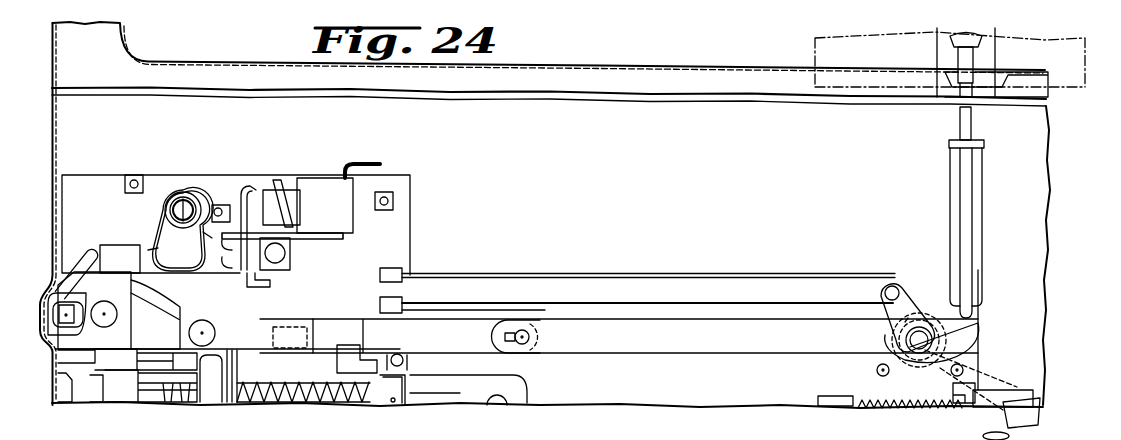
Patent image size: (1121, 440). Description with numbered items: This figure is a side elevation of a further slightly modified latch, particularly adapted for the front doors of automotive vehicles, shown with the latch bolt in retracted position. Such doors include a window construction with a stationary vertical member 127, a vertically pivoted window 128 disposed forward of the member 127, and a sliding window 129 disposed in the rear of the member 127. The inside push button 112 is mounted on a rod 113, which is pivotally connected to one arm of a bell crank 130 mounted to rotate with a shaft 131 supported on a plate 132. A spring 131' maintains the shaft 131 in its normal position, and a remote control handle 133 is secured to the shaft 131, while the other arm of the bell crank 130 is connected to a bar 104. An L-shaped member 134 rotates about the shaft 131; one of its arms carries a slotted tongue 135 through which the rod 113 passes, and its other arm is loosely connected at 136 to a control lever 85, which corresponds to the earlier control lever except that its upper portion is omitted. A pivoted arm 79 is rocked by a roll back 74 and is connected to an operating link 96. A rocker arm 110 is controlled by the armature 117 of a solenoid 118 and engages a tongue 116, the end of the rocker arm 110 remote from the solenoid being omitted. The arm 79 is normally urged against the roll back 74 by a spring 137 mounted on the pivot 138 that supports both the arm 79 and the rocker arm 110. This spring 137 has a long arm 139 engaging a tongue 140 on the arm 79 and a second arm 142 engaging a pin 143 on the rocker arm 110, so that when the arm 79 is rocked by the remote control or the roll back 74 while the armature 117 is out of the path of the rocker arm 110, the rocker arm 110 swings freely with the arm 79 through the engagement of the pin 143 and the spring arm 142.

The roll back 74 is at (85, 250).
The pivoted arm 79 is at (118, 246).
The control lever 85 is at (458, 350).
The operating link 96 is at (288, 350).
The bar 104 is at (690, 283).
The rocker arm 110 is at (224, 205).
The inside push button 112 is at (985, 67).
The rod 113 is at (972, 128).
The tongue 116 is at (278, 206).
The armature 117 is at (283, 180).
The solenoid 118 is at (354, 165).
The stationary vertical member 127 is at (936, 52).
The vertically pivoted window 128 is at (1080, 70).
The sliding window 129 is at (840, 52).
The bell crank 130 is at (975, 323).
The shaft 131 is at (897, 375).
The spring 131' is at (939, 377).
The plate 132 is at (977, 348).
The remote control handle 133 is at (1035, 418).
The L-shaped member 134 is at (980, 238).
The slotted tongue 135 is at (985, 144).
The loose connection 136 is at (528, 346).
The spring 137 is at (192, 193).
The pivot 138 is at (248, 184).
The long arm 139 is at (163, 240).
The tongue 140 is at (150, 250).
The arm 142 is at (206, 232).
The pin 143 is at (220, 216).